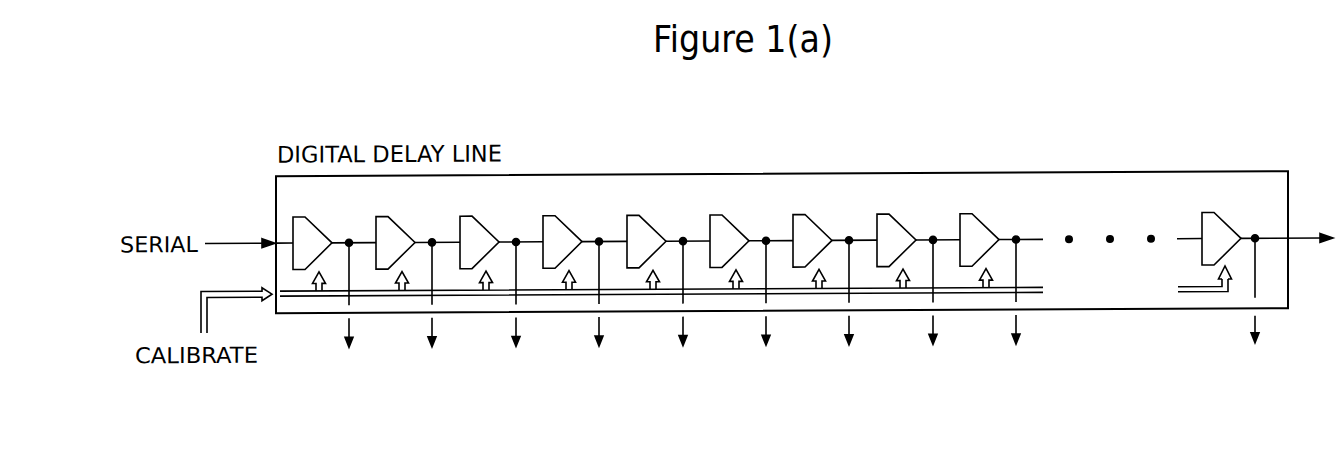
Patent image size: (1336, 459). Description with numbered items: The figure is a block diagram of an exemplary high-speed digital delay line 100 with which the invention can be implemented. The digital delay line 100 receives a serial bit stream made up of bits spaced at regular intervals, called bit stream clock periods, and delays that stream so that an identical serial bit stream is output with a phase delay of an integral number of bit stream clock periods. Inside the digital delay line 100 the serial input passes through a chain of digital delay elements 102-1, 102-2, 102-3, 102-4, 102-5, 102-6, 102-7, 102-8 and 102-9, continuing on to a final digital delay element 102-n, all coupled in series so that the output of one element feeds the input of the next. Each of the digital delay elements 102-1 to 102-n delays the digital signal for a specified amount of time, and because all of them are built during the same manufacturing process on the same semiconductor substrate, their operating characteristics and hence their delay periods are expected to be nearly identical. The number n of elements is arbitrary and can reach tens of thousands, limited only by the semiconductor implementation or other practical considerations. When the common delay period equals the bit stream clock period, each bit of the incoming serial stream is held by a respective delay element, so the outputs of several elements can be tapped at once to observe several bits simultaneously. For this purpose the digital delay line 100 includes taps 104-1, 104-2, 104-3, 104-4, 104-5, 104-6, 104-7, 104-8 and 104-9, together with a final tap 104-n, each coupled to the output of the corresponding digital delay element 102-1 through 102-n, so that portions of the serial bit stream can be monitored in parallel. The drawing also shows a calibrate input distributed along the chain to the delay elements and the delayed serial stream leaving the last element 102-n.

The digital delay line 100 is at (782, 224).
The digital delay element 102-1 is at (326, 240).
The digital delay element 102-2 is at (409, 239).
The digital delay element 102-3 is at (493, 239).
The digital delay element 102-4 is at (576, 238).
The digital delay element 102-5 is at (660, 238).
The digital delay element 102-6 is at (743, 238).
The digital delay element 102-7 is at (826, 237).
The digital delay element 102-8 is at (910, 237).
The digital delay element 102-9 is at (993, 236).
The digital delay element 102-n is at (1237, 233).
The tap 104-1 is at (348, 309).
The tap 104-2 is at (431, 309).
The tap 104-3 is at (515, 308).
The tap 104-4 is at (598, 308).
The tap 104-5 is at (682, 307).
The tap 104-6 is at (765, 307).
The tap 104-7 is at (848, 307).
The tap 104-8 is at (932, 306).
The tap 104-9 is at (1015, 306).
The tap 104-n is at (1262, 305).